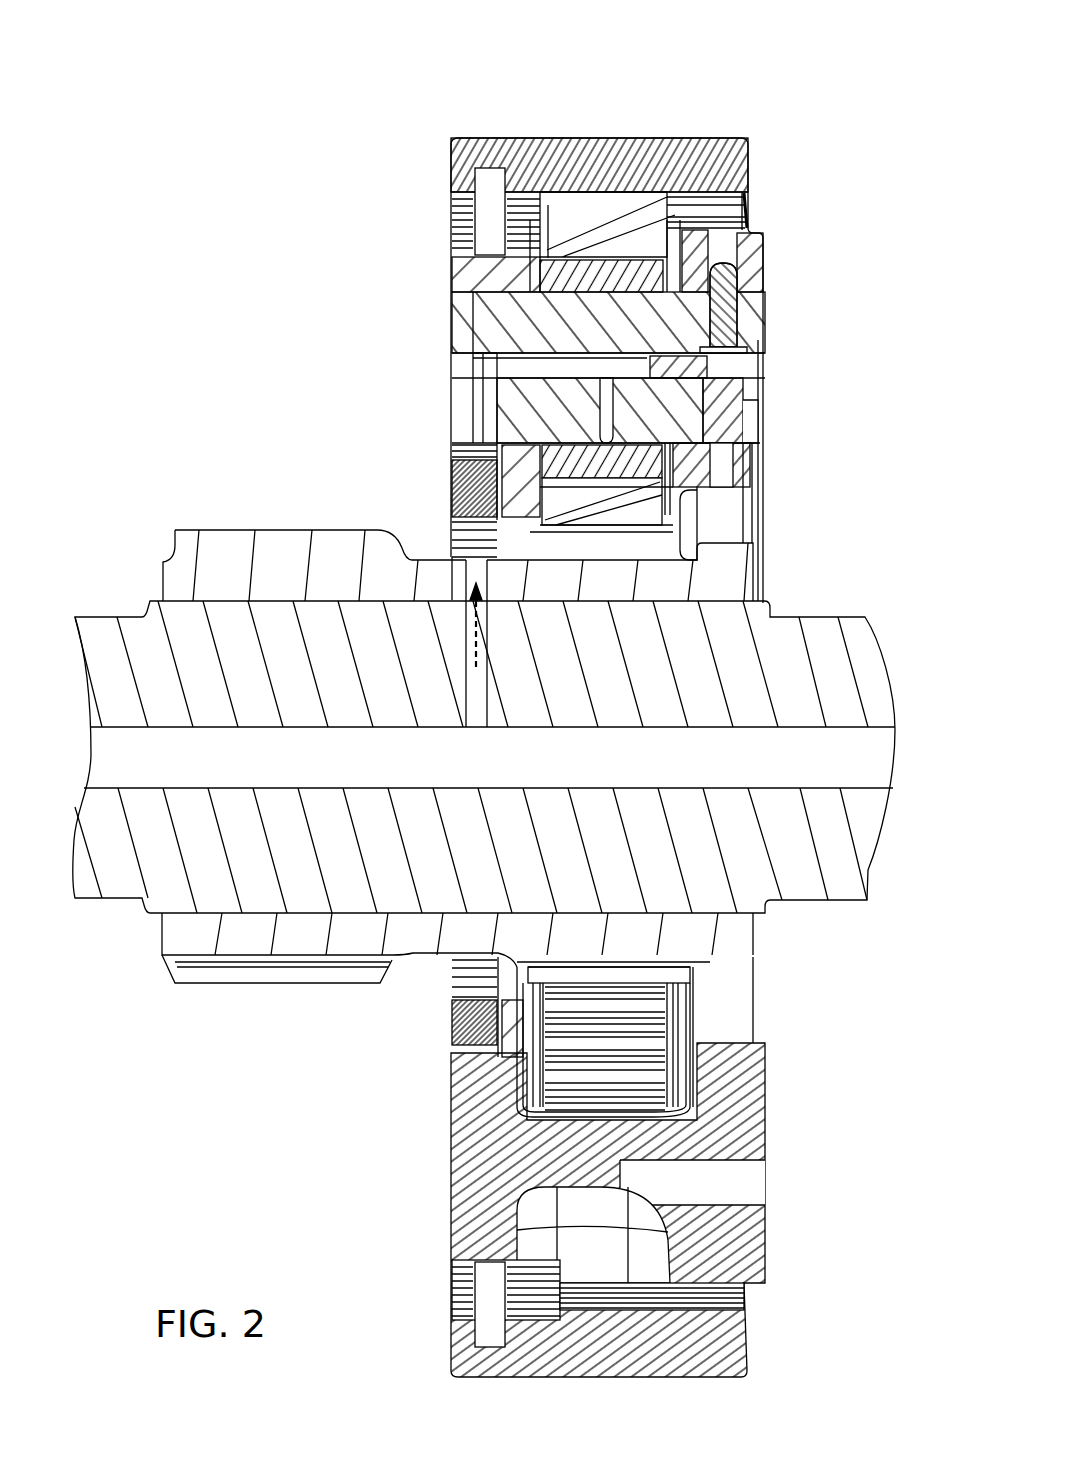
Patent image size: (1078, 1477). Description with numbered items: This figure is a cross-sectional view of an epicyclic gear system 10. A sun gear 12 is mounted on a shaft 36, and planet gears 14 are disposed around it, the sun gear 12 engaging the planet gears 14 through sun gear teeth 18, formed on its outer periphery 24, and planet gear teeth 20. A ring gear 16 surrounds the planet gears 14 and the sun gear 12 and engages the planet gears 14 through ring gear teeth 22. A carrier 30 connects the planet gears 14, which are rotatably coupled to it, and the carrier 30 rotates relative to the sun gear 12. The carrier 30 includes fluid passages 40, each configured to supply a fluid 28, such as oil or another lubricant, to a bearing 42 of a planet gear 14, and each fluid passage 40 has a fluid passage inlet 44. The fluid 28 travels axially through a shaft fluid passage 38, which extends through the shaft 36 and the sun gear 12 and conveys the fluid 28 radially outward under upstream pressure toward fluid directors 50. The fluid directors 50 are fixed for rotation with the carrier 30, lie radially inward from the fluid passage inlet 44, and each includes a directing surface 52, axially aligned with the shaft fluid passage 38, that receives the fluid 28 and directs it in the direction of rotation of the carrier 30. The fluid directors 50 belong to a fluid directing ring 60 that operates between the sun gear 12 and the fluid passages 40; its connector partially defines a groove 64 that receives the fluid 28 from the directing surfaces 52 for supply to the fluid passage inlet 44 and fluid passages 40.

The epicyclic gear system 10 is at (748, 55).
The sun gear 12 is at (710, 562).
The planet gears 14 is at (740, 213).
The ring gear 16 is at (643, 143).
The sun gear teeth 18 is at (650, 538).
The planet gear teeth 20 is at (673, 497).
The ring gear teeth 22 is at (717, 188).
The outer periphery 24 is at (653, 525).
The fluid 28 is at (459, 640).
The carrier 30 is at (735, 1110).
The shaft 36 is at (818, 643).
The shaft fluid passage 38 is at (500, 702).
The fluid passage 40 is at (470, 438).
The bearing 42 is at (472, 343).
The fluid passage inlet 44 is at (472, 410).
The fluid directors 50 is at (450, 538).
The directing surface 52 is at (470, 470).
The fluid directing ring 60 is at (447, 499).
The groove 64 is at (457, 467).